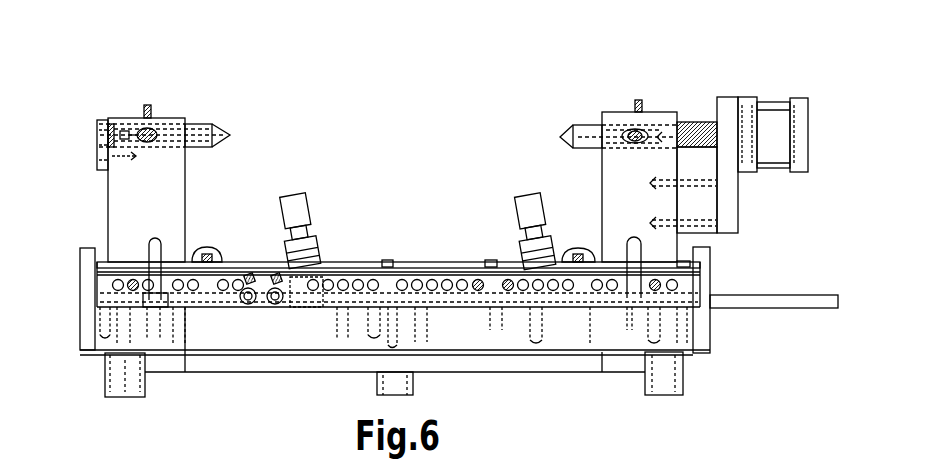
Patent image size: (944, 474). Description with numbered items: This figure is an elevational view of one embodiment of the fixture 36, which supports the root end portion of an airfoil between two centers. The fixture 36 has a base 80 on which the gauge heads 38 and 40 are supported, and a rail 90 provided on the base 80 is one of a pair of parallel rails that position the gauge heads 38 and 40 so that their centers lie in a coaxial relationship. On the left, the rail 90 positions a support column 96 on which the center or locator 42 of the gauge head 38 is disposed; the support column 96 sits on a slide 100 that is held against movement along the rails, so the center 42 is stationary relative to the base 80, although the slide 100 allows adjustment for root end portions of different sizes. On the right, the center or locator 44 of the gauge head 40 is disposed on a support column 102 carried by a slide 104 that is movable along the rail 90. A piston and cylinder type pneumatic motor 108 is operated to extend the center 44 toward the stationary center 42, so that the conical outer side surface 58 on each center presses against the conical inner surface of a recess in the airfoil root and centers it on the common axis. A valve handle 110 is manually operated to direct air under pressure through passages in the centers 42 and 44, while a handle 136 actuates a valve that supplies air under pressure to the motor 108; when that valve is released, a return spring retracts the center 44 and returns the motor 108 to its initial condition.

The fixture 36 is at (408, 85).
The gauge head 38 is at (63, 158).
The gauge head 40 is at (757, 207).
The center or locator 42 is at (193, 118).
The center or locator 44 is at (587, 125).
The conical outer side surface 58 is at (224, 128).
The base 80 is at (88, 332).
The rail 90 is at (413, 270).
The support column 96 is at (136, 200).
The slide 100 is at (180, 247).
The support column 102 is at (632, 168).
The slide 104 is at (613, 260).
The pneumatic motor 108 is at (770, 120).
The valve handle 110 is at (292, 212).
The handle 136 is at (528, 207).